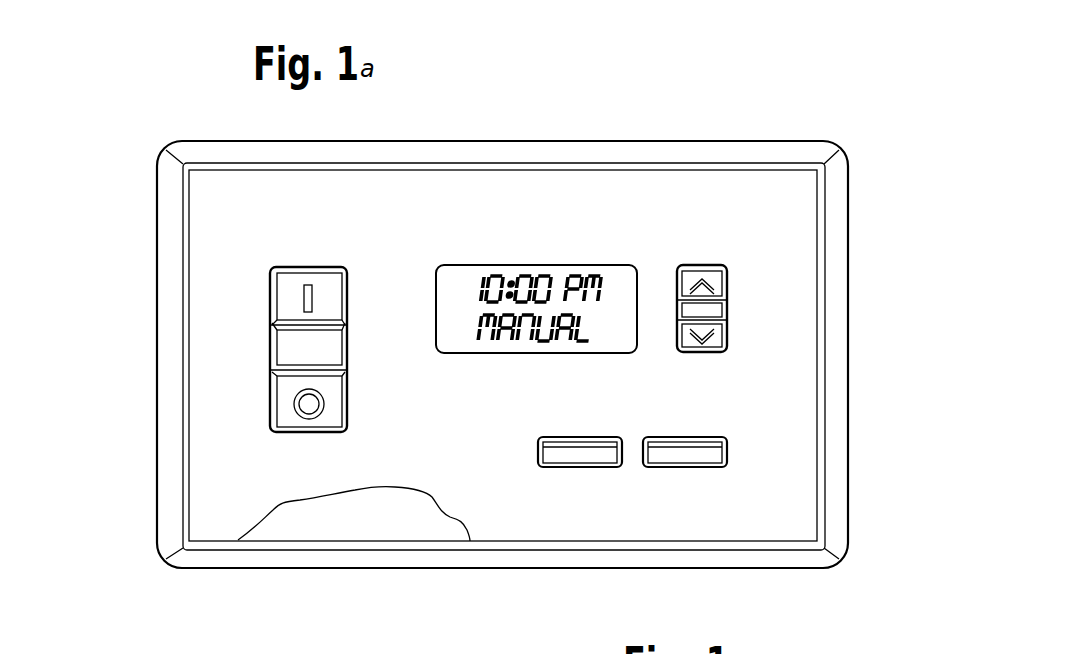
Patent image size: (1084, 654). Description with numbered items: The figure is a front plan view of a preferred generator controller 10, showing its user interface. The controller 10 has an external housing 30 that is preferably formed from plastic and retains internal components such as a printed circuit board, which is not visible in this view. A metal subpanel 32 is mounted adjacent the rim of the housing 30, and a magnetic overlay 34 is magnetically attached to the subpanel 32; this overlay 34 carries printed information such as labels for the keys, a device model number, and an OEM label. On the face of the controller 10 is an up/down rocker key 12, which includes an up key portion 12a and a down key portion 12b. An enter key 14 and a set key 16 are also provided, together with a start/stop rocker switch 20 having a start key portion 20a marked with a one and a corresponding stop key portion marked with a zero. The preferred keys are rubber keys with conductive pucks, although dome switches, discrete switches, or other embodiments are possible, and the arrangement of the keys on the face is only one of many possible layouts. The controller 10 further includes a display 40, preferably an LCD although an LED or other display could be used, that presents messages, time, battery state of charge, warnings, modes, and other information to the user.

The generator controller 10 is at (465, 110).
The up/down rocker key 12 is at (809, 192).
The up key portion 12a is at (728, 285).
The down key portion 12b is at (812, 320).
The enter key 14 is at (728, 443).
The set key 16 is at (593, 467).
The start/stop rocker switch 20 is at (263, 255).
The start key portion 20a is at (268, 302).
The external housing 30 is at (172, 568).
The metal subpanel 32 is at (345, 513).
The magnetic overlay 34 is at (496, 518).
The display 40 is at (515, 263).